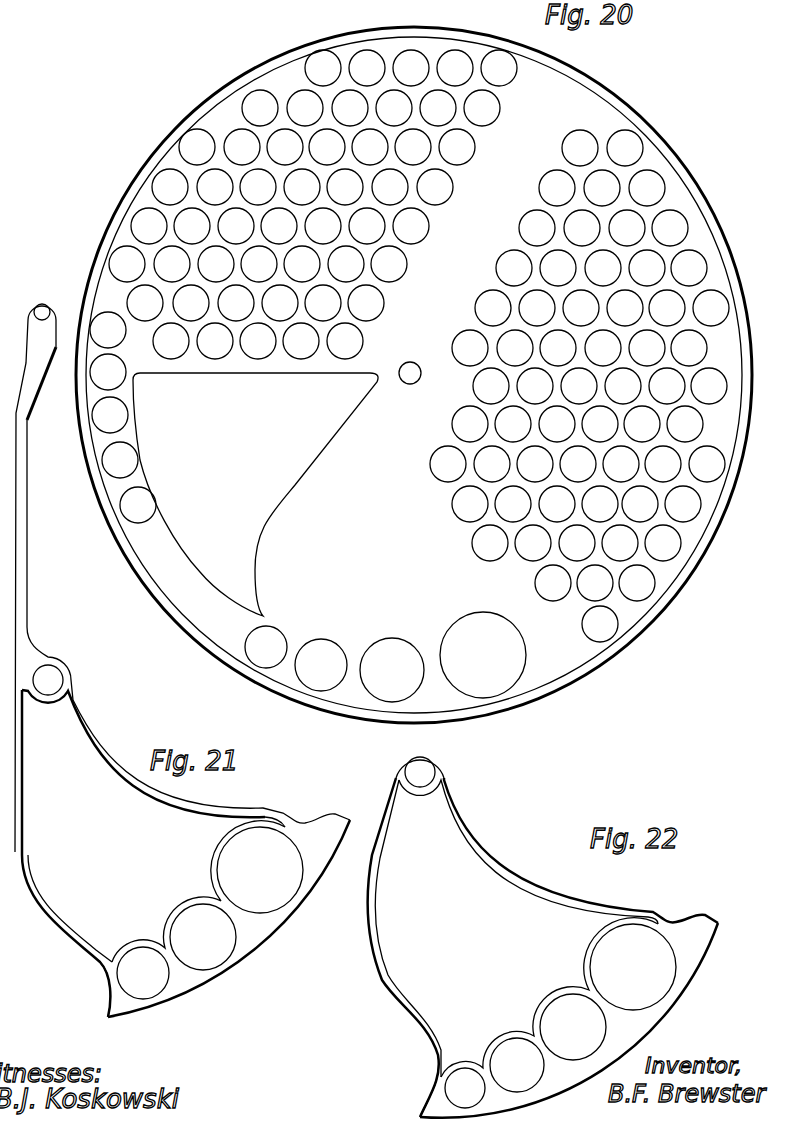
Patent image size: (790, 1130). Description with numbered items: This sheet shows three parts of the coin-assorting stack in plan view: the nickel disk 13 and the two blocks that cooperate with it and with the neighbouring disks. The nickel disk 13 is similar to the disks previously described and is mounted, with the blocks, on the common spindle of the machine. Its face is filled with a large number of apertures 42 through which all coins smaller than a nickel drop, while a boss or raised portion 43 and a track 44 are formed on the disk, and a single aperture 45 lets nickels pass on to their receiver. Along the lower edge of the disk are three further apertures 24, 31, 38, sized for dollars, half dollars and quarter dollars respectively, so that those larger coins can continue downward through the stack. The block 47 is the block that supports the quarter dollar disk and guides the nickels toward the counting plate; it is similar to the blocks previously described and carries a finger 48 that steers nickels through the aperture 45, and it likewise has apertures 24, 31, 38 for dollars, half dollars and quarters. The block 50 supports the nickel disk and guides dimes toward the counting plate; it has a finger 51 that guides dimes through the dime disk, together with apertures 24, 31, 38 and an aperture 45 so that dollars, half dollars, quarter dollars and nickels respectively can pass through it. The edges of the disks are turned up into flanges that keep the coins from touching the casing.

In FIG. 20, the nickel disk 13 is at (670, 582).
In FIG. 20, the apertures 42 is at (407, 55).
In FIG. 20, the boss 43 is at (255, 494).
In FIG. 20, the track 44 is at (153, 573).
In FIG. 20, the aperture 45 is at (252, 652).
In FIG. 22, the aperture 45 is at (470, 1100).
In FIG. 20, the aperture 38 is at (298, 673).
In FIG. 21, the aperture 38 is at (157, 987).
In FIG. 22, the aperture 38 is at (533, 1087).
In FIG. 20, the aperture 31 is at (363, 690).
In FIG. 21, the aperture 31 is at (222, 957).
In FIG. 22, the aperture 31 is at (583, 1058).
In FIG. 20, the aperture 24 is at (477, 693).
In FIG. 21, the aperture 24 is at (272, 907).
In FIG. 22, the aperture 24 is at (653, 1002).
In FIG. 21, the block 47 is at (75, 712).
In FIG. 21, the finger 48 is at (108, 1017).
In FIG. 22, the block 50 is at (477, 840).
In FIG. 22, the finger 51 is at (427, 1100).